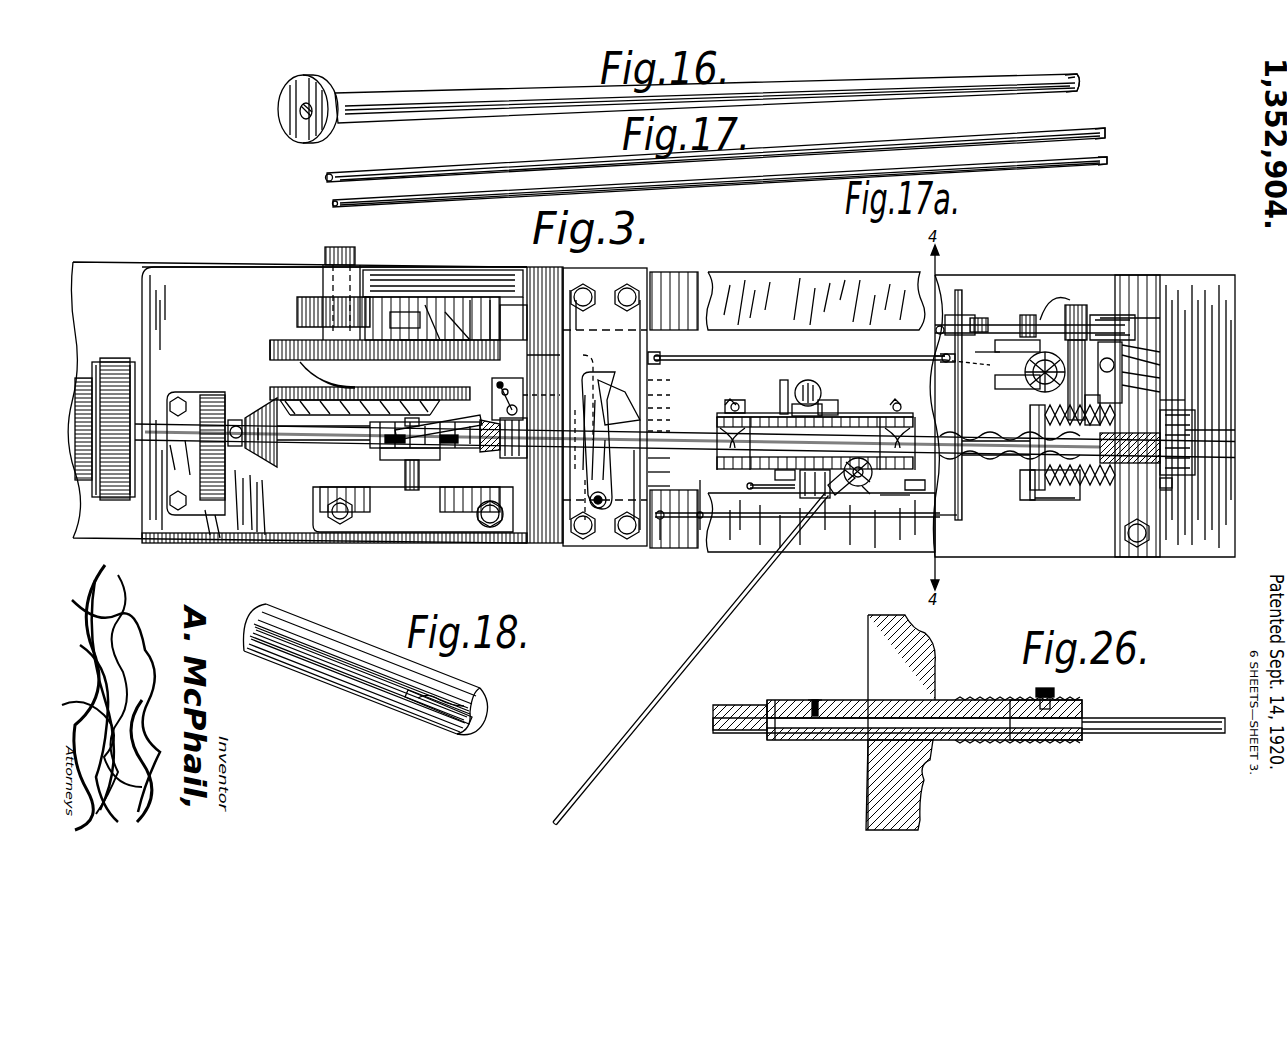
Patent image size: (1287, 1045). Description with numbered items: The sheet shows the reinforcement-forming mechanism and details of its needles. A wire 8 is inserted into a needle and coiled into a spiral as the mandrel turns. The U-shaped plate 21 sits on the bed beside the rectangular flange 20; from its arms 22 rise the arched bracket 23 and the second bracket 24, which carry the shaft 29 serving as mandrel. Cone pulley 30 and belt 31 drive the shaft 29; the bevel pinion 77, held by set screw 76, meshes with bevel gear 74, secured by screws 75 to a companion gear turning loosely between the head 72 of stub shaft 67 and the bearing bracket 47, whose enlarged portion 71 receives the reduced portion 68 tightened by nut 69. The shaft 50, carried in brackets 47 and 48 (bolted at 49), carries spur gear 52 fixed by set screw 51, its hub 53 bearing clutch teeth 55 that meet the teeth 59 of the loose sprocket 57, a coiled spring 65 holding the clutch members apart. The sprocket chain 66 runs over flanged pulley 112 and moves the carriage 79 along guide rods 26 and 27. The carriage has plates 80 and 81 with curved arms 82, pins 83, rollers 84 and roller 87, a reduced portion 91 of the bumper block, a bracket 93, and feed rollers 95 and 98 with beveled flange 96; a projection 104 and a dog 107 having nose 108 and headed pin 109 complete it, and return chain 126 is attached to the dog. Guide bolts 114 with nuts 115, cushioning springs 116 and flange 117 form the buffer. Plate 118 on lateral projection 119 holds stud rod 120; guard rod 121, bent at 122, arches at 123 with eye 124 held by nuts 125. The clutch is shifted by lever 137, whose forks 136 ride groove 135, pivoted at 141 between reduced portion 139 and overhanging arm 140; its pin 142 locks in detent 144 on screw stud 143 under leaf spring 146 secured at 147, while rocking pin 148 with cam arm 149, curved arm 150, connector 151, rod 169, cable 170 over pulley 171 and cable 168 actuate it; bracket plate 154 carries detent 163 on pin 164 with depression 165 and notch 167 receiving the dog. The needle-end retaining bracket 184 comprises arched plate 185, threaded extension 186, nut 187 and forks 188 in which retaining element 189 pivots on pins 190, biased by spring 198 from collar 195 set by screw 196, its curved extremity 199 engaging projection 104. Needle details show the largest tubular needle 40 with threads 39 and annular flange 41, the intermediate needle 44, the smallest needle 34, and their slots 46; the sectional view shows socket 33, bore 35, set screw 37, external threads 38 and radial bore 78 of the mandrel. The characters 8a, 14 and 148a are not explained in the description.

In FIG. 3, the main shaft 8 is at (985, 450).
In FIG. 3, the shaft section 8a is at (1034, 485).
In FIG. 3, the direction of movement 14 is at (468, 332).
In FIG. 3, the block 20 is at (405, 314).
In FIG. 3, the base rail 21 is at (450, 540).
In FIG. 3, the frame plate 22 is at (498, 275).
In FIG. 3, the sleeve collar 23 is at (1130, 448).
In FIG. 26, the sleeve collar 23 is at (865, 658).
In FIG. 3, the bearing bracket 24 is at (205, 455).
In FIG. 3, the shaft 26 is at (1010, 468).
In FIG. 3, the shaft 27 is at (282, 452).
In FIG. 26, the rod end 29 is at (745, 728).
In FIG. 3, the pulley wheel 30 is at (98, 370).
In FIG. 3, the pulley hub 31 is at (112, 492).
In FIG. 26, the sleeve 33 is at (853, 722).
In FIG. 17a, the rod 34 is at (757, 183).
In FIG. 26, the threaded portion 35 is at (1033, 740).
In FIG. 26, the set screw 37 is at (1054, 692).
In FIG. 26, the nut 38 is at (1075, 741).
In FIG. 16, the disk 39 is at (300, 110).
In FIG. 16, the tube 40 is at (528, 95).
In FIG. 18, the tube 40 is at (380, 690).
In FIG. 16, the disk hole 41 is at (320, 92).
In FIG. 17, the rod 44 is at (847, 146).
In FIG. 26, the rod 44 is at (1166, 735).
In FIG. 16, the slot 46 is at (1107, 158).
In FIG. 18, the slot 46 is at (486, 705).
In FIG. 3, the shaft 47 is at (468, 312).
In FIG. 3, the bracket 48 is at (410, 495).
In FIG. 3, the bolt 49 is at (492, 508).
In FIG. 3, the rod 50 is at (410, 470).
In FIG. 3, the gear 51 is at (430, 319).
In FIG. 3, the block 52 is at (505, 338).
In FIG. 3, the plate 53 is at (522, 332).
In FIG. 3, the pin 55 is at (457, 322).
In FIG. 3, the clutch member 57 is at (409, 453).
In FIG. 3, the lever 59 is at (475, 417).
In FIG. 3, the bevel gear 65 is at (327, 375).
In FIG. 3, the collar 66 is at (485, 446).
In FIG. 3, the bearing block 67 is at (331, 300).
In FIG. 3, the housing block 68 is at (443, 305).
In FIG. 3, the nut 69 is at (356, 255).
In FIG. 3, the spindle 71 is at (330, 282).
In FIG. 3, the shaft 72 is at (323, 444).
In FIG. 3, the gear 74 is at (282, 382).
In FIG. 3, the gear 75 is at (285, 340).
In FIG. 3, the collar 76 is at (235, 419).
In FIG. 3, the bevel gear 77 is at (274, 462).
In FIG. 3, the pin 78 is at (270, 352).
In FIG. 26, the pin 78 is at (812, 702).
In FIG. 3, the block 79 is at (736, 401).
In FIG. 3, the upper bar 80 is at (755, 418).
In FIG. 3, the rod 81 is at (765, 490).
In FIG. 3, the lower bar 82 is at (733, 470).
In FIG. 3, the pivot 83 is at (734, 405).
In FIG. 3, the collar 84 is at (722, 412).
In FIG. 3, the block 87 is at (830, 430).
In FIG. 3, the disk 91 is at (856, 488).
In FIG. 3, the pawl 93 is at (850, 480).
In FIG. 3, the rod 95 is at (905, 492).
In FIG. 3, the block 96 is at (921, 479).
In FIG. 3, the pin 98 is at (873, 496).
In FIG. 3, the ball handle 104 is at (806, 371).
In FIG. 3, the block 107 is at (815, 500).
In FIG. 3, the arm 108 is at (790, 412).
In FIG. 3, the block 109 is at (780, 482).
In FIG. 3, the plate 112 is at (1192, 400).
In FIG. 3, the block 114 is at (1172, 482).
In FIG. 3, the pin 115 is at (1171, 491).
In FIG. 3, the bracket 116 is at (1080, 500).
In FIG. 3, the plate 117 is at (1060, 500).
In FIG. 3, the plate 118 is at (1030, 420).
In FIG. 3, the bar 119 is at (1140, 318).
In FIG. 3, the rail 120 is at (1030, 318).
In FIG. 3, the rod 121 is at (740, 520).
In FIG. 3, the rod 122 is at (662, 540).
In FIG. 3, the pin 123 is at (924, 339).
In FIG. 3, the vertical bar 124 is at (960, 405).
In FIG. 3, the block 125 is at (991, 311).
In FIG. 3, the shaft 126 is at (832, 462).
In FIG. 3, the clutch 135 is at (370, 445).
In FIG. 3, the key 136 is at (462, 427).
In FIG. 3, the collar 137 is at (531, 440).
In FIG. 3, the box 139 is at (516, 379).
In FIG. 3, the rod 140 is at (542, 395).
In FIG. 3, the pin 141 is at (500, 392).
In FIG. 3, the lever 142 is at (640, 422).
In FIG. 3, the pivot 143 is at (610, 500).
In FIG. 3, the rod 144 is at (668, 472).
In FIG. 3, the rod 146 is at (668, 486).
In FIG. 3, the rod 147 is at (592, 550).
In FIG. 3, the rod 148 is at (670, 417).
In FIG. 3, the rod 148a is at (608, 390).
In FIG. 3, the rod 149 is at (670, 429).
In FIG. 3, the rod 150 is at (669, 392).
In FIG. 3, the rod 151 is at (668, 378).
In FIG. 3, the rod 154 is at (670, 405).
In FIG. 3, the lever 163 is at (1160, 392).
In FIG. 3, the lever 164 is at (1160, 365).
In FIG. 3, the lever 165 is at (1160, 352).
In FIG. 3, the bar 167 is at (1030, 352).
In FIG. 3, the rod end 168 is at (660, 372).
In FIG. 3, the rod 169 is at (820, 348).
In FIG. 3, the pin 170 is at (951, 350).
In FIG. 3, the link 171 is at (965, 372).
In FIG. 3, the block 184 is at (1100, 314).
In FIG. 3, the post 185 is at (1064, 358).
In FIG. 3, the gear 186 is at (1054, 344).
In FIG. 3, the block 187 is at (1067, 311).
In FIG. 3, the housing 188 is at (1100, 365).
In FIG. 3, the spring 189 is at (1115, 408).
In FIG. 3, the lever 190 is at (1160, 378).
In FIG. 3, the block 195 is at (1028, 314).
In FIG. 3, the arm 196 is at (1038, 317).
In FIG. 3, the block 198 is at (1102, 410).
In FIG. 3, the pin 199 is at (985, 355).